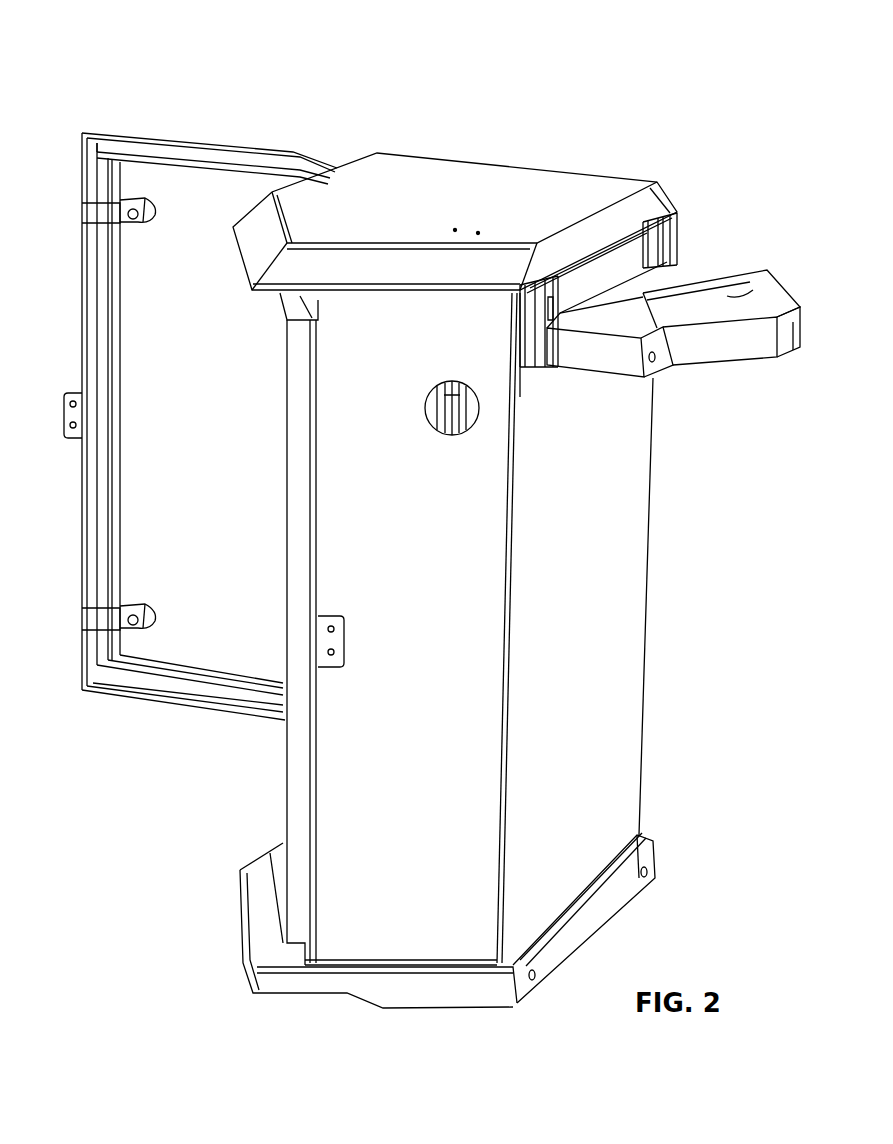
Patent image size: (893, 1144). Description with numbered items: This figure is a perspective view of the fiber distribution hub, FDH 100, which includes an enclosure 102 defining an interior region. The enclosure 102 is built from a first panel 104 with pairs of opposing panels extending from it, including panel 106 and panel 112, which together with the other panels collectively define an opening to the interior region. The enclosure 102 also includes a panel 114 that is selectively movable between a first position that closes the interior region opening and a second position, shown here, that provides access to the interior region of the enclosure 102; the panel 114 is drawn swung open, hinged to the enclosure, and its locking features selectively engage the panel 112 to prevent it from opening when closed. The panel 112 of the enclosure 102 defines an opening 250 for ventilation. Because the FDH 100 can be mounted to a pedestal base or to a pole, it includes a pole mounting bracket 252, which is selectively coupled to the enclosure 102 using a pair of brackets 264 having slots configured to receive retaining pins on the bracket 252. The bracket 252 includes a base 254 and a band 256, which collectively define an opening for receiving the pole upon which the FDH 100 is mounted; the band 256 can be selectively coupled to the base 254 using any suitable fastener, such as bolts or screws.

The FDH 100 is at (104, 46).
The enclosure 102 is at (605, 668).
The first panel 104 is at (613, 518).
The panel 106 is at (510, 178).
The panel 112 is at (385, 765).
The panel 114 is at (215, 195).
The opening 250 is at (480, 415).
The pole mounting bracket 252 is at (750, 282).
The base 254 is at (686, 314).
The band 256 is at (787, 337).
The brackets 264 is at (550, 290).